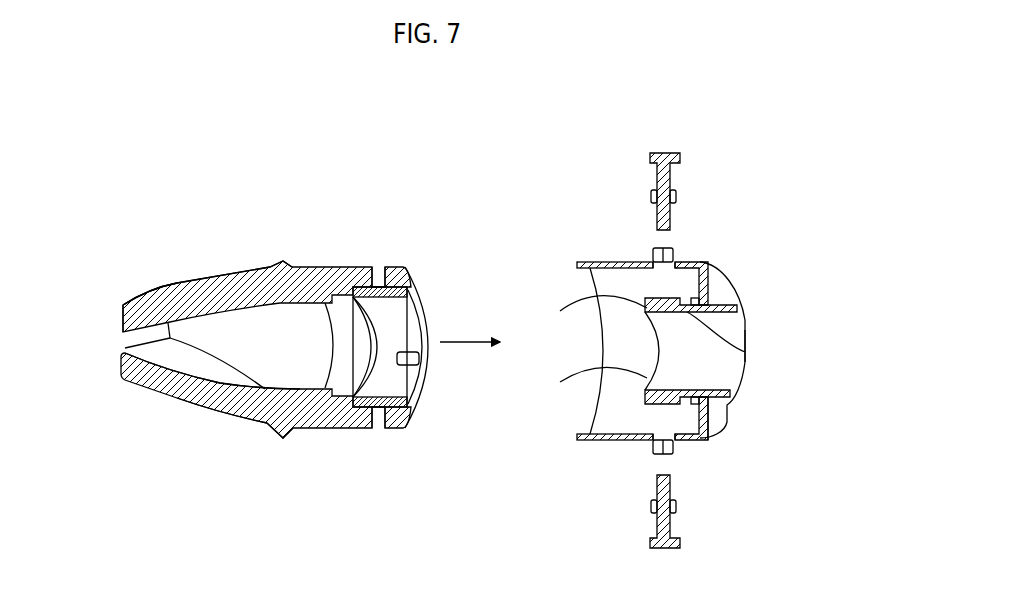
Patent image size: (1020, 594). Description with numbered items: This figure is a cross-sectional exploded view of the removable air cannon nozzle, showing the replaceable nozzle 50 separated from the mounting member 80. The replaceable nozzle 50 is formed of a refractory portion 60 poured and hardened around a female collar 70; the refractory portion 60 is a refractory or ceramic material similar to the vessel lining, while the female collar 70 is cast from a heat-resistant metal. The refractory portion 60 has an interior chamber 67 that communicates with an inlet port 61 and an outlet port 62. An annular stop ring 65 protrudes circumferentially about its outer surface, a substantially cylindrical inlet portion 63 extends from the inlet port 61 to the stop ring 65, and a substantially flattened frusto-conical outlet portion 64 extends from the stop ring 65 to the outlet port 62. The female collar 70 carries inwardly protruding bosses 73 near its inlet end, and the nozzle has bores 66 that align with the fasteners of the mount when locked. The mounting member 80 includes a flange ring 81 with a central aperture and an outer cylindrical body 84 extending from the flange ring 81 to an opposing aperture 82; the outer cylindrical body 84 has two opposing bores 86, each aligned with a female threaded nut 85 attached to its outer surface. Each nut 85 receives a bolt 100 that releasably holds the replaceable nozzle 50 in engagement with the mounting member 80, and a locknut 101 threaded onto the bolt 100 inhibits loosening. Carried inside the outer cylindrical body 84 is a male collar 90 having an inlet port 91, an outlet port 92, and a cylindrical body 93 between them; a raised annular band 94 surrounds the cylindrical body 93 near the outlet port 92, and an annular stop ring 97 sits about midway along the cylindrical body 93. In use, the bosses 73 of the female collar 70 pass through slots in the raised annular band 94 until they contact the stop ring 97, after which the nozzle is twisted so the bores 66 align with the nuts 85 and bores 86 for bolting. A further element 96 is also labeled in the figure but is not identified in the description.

The replaceable nozzle 50 is at (269, 166).
The refractory portion 60 is at (221, 279).
The inlet port 61 is at (413, 405).
The outlet port 62 is at (123, 347).
The cylindrical inlet portion 63 is at (323, 267).
The flattened frusto-conical outlet portion 64 is at (178, 283).
The annular stop ring 65 is at (286, 262).
The bore 66 is at (378, 274).
The interior chamber 67 is at (249, 420).
The female collar 70 is at (398, 317).
The boss 73 is at (428, 292).
The mounting member 80 is at (612, 166).
The flange ring 81 is at (722, 286).
The opposing aperture 82 is at (592, 414).
The outer cylindrical body 84 is at (603, 262).
The female threaded nut 85 is at (673, 256).
The bore 86 is at (648, 262).
The male collar 90 is at (733, 330).
The inlet port 91 is at (743, 372).
The outlet port 92 is at (560, 382).
The cylindrical body 93 is at (728, 404).
The raised annular band 94 is at (560, 311).
The inner wall 96 is at (745, 352).
The annular stop ring 97 is at (716, 287).
The bolt 100 is at (681, 158).
The locknut 101 is at (676, 197).